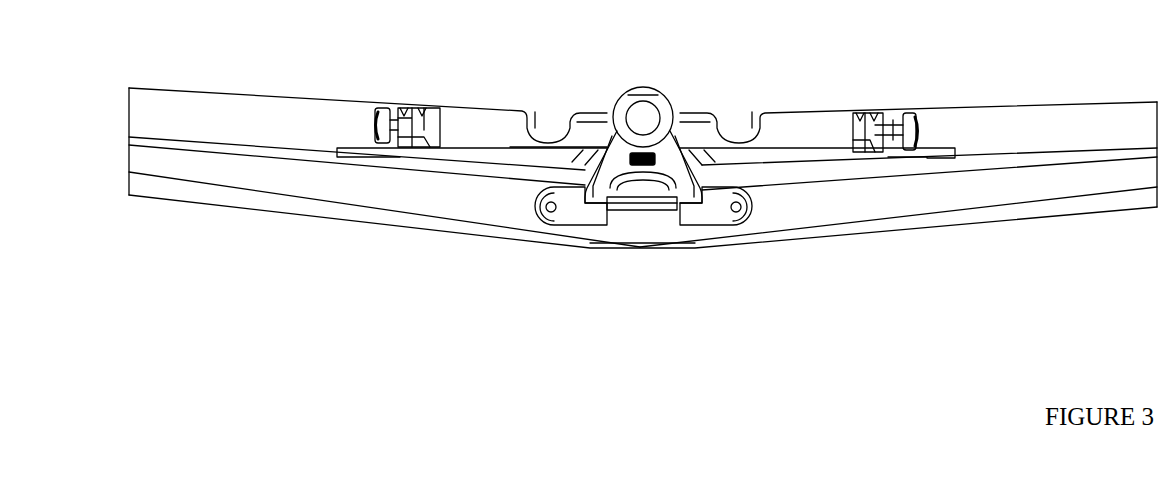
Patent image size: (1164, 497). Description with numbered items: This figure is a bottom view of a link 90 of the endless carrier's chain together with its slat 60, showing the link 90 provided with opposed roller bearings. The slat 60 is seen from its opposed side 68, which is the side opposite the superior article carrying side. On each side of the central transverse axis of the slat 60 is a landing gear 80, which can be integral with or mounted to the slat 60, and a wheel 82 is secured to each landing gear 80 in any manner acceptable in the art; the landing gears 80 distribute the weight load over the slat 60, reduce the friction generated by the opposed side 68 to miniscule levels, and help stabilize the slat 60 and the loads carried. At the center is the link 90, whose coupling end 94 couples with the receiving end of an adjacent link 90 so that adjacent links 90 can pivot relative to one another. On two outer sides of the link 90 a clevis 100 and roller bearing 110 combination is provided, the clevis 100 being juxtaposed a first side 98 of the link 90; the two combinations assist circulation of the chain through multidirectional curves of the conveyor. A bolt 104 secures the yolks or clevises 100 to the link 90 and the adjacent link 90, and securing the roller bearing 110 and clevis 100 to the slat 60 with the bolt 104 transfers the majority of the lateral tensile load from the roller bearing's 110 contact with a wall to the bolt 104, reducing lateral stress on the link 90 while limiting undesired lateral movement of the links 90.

The slat 60 is at (1107, 98).
The opposed side 68 is at (1107, 198).
The landing gear 80 is at (433, 112).
The wheel 82 is at (383, 110).
The link 90 is at (653, 169).
The coupling end 94 is at (660, 98).
The first side 98 is at (603, 213).
The clevis 100 is at (570, 220).
The bolt 104 is at (647, 210).
The roller bearing 110 is at (532, 215).